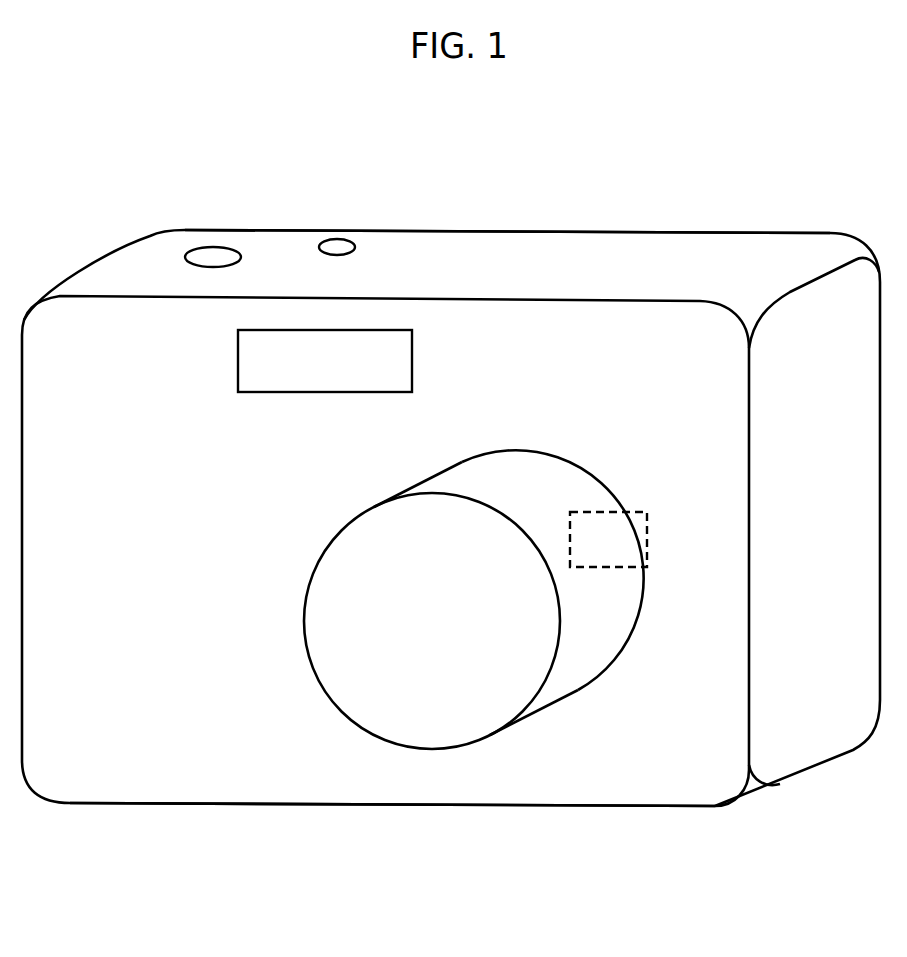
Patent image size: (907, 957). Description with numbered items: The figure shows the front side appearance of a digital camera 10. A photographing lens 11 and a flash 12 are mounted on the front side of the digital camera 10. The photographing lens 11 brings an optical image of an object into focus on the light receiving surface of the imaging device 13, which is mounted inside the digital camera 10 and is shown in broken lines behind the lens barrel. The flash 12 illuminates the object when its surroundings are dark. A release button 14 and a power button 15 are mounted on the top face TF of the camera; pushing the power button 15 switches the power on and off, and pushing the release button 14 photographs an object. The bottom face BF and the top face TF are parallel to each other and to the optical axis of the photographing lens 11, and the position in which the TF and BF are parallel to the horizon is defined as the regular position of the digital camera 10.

The digital camera 10 is at (202, 806).
The photographing lens 11 is at (385, 740).
The flash 12 is at (412, 362).
The imaging device 13 is at (595, 567).
The release button 14 is at (217, 247).
The power button 15 is at (337, 239).
The top face TF is at (630, 268).
The bottom face BF is at (605, 808).